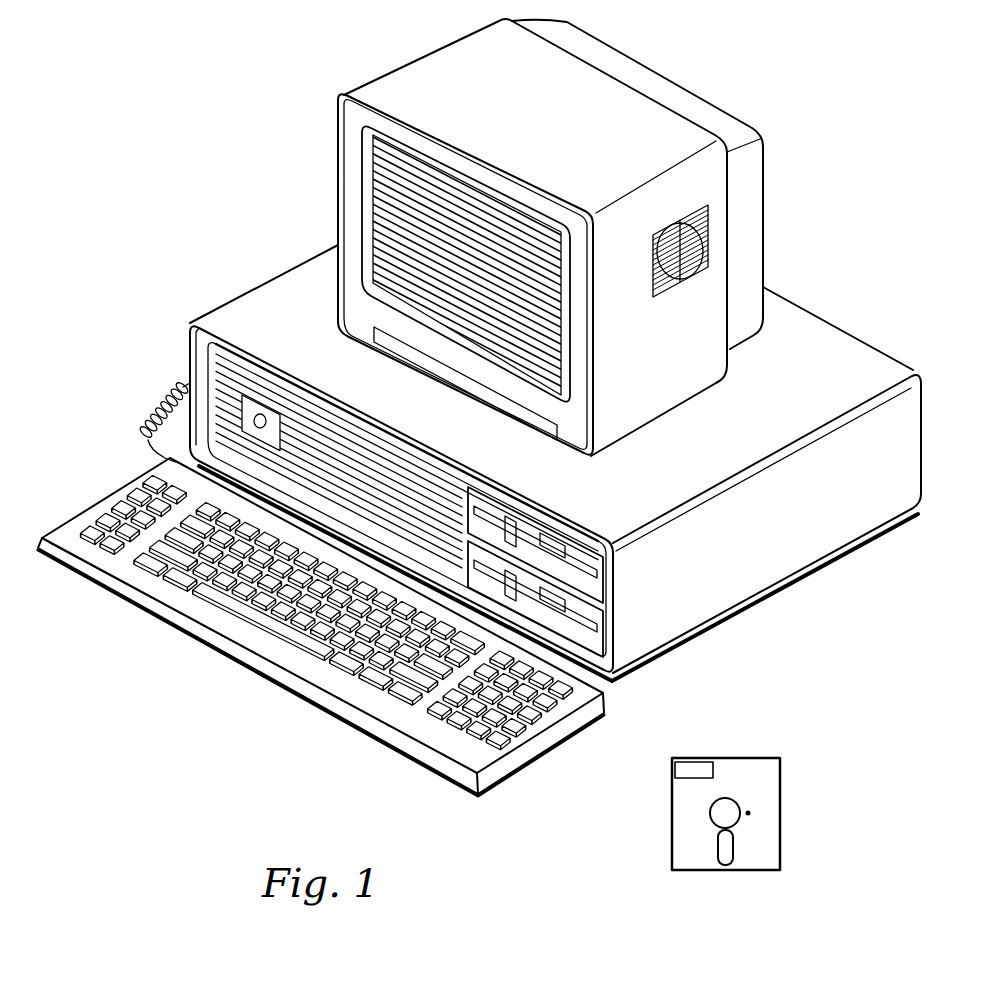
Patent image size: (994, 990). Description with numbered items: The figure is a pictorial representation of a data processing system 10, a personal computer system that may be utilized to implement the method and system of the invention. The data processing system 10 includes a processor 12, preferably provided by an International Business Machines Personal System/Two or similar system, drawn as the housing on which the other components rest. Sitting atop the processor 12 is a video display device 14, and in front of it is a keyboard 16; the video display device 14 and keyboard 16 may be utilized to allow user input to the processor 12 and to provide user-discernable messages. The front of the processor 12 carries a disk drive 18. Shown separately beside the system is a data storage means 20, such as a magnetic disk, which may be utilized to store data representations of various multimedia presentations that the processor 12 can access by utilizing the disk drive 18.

The data processing system 10 is at (238, 136).
The processor 12 is at (790, 568).
The video display device 14 is at (758, 250).
The keyboard 16 is at (325, 708).
The disk drive 18 is at (565, 552).
The data storage means 20 is at (773, 815).